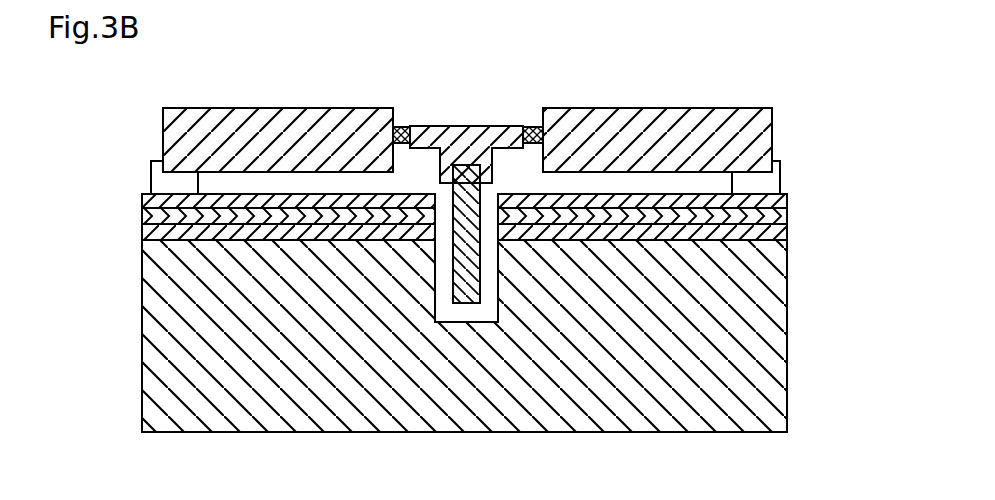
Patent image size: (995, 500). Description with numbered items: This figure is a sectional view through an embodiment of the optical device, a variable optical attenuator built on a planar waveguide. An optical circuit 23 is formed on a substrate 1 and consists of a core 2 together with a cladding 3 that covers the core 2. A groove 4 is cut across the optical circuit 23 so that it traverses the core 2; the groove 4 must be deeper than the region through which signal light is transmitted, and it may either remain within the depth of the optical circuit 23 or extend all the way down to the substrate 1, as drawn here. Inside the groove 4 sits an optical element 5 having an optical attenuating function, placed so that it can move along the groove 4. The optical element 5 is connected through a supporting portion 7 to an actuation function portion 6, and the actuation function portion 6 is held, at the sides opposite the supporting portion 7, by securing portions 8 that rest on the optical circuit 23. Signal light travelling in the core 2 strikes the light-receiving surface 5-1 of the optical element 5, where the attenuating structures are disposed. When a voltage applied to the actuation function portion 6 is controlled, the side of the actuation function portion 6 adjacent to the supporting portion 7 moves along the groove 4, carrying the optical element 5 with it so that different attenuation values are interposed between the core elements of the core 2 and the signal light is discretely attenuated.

The substrate 1 is at (727, 375).
The core 2 is at (788, 213).
The cladding 3 is at (788, 200).
The optical circuit 23 is at (465, 224).
The groove 4 is at (442, 310).
The optical element 5 is at (468, 292).
The light-receiving surface 5-1 is at (452, 247).
The actuation function portion 6 is at (234, 133).
The supporting portion 7 is at (455, 143).
The securing portion 8 is at (151, 163).